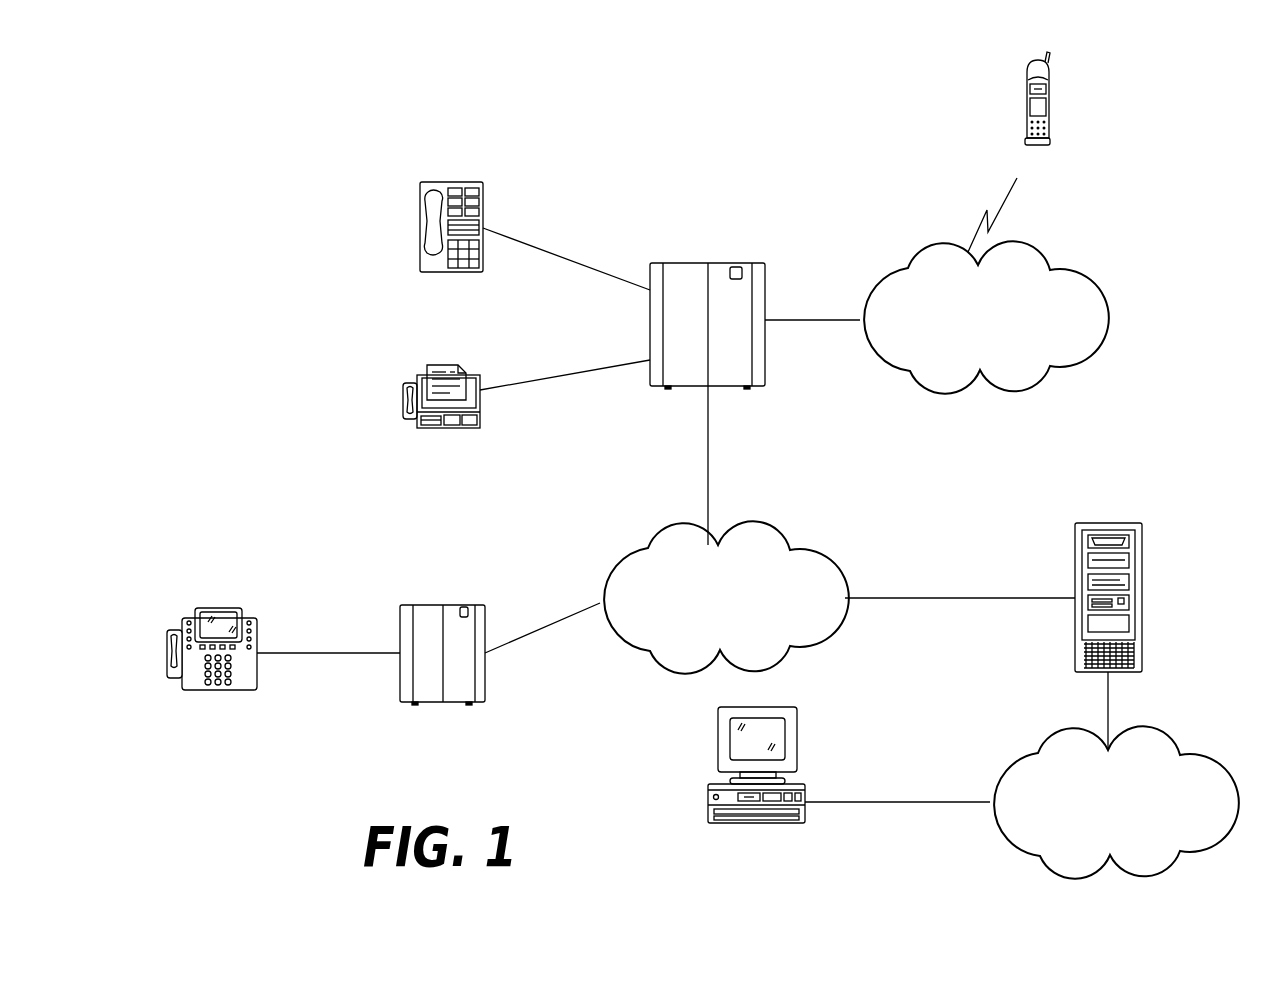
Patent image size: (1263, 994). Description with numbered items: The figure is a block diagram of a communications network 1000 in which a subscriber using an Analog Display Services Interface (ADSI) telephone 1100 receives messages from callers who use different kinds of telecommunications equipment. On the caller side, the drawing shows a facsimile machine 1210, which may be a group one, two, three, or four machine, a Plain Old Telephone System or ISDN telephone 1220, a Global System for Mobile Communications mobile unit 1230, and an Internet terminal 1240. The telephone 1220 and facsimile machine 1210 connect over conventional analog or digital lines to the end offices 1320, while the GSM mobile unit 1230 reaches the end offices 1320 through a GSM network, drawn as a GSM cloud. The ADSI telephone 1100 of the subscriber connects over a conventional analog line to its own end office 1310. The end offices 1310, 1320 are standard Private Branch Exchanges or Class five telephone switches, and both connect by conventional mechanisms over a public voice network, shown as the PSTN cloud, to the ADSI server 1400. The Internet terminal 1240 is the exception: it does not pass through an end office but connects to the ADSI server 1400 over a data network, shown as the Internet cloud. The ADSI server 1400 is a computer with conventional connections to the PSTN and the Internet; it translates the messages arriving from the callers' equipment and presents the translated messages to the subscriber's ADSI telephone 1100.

The communications network 1000 is at (178, 92).
The ADSI telephone 1100 is at (209, 657).
The facsimile machine 1210 is at (424, 410).
The telephone 1220 is at (436, 217).
The GSM mobile unit 1230 is at (1035, 107).
The Internet terminal 1240 is at (757, 784).
The end office 1310 is at (468, 662).
The end offices 1320 is at (730, 335).
The ADSI server 1400 is at (1122, 578).